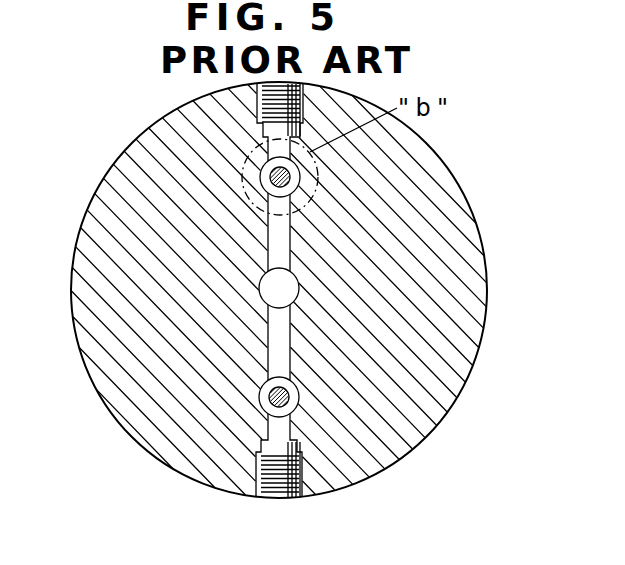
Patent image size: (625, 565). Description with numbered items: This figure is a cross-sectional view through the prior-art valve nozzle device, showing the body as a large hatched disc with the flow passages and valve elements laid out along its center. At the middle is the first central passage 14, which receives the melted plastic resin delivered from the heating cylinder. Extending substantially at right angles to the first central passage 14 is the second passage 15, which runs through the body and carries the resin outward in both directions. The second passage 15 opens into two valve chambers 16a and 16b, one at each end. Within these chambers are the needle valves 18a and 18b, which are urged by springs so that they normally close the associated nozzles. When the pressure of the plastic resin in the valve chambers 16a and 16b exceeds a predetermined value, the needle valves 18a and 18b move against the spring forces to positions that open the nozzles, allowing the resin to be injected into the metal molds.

The first central passage 14 is at (271, 288).
The second passage 15 is at (283, 242).
The valve chamber 16a is at (259, 177).
The needle valve 18a is at (291, 177).
The valve chamber 16b is at (260, 396).
The needle valve 18b is at (290, 397).